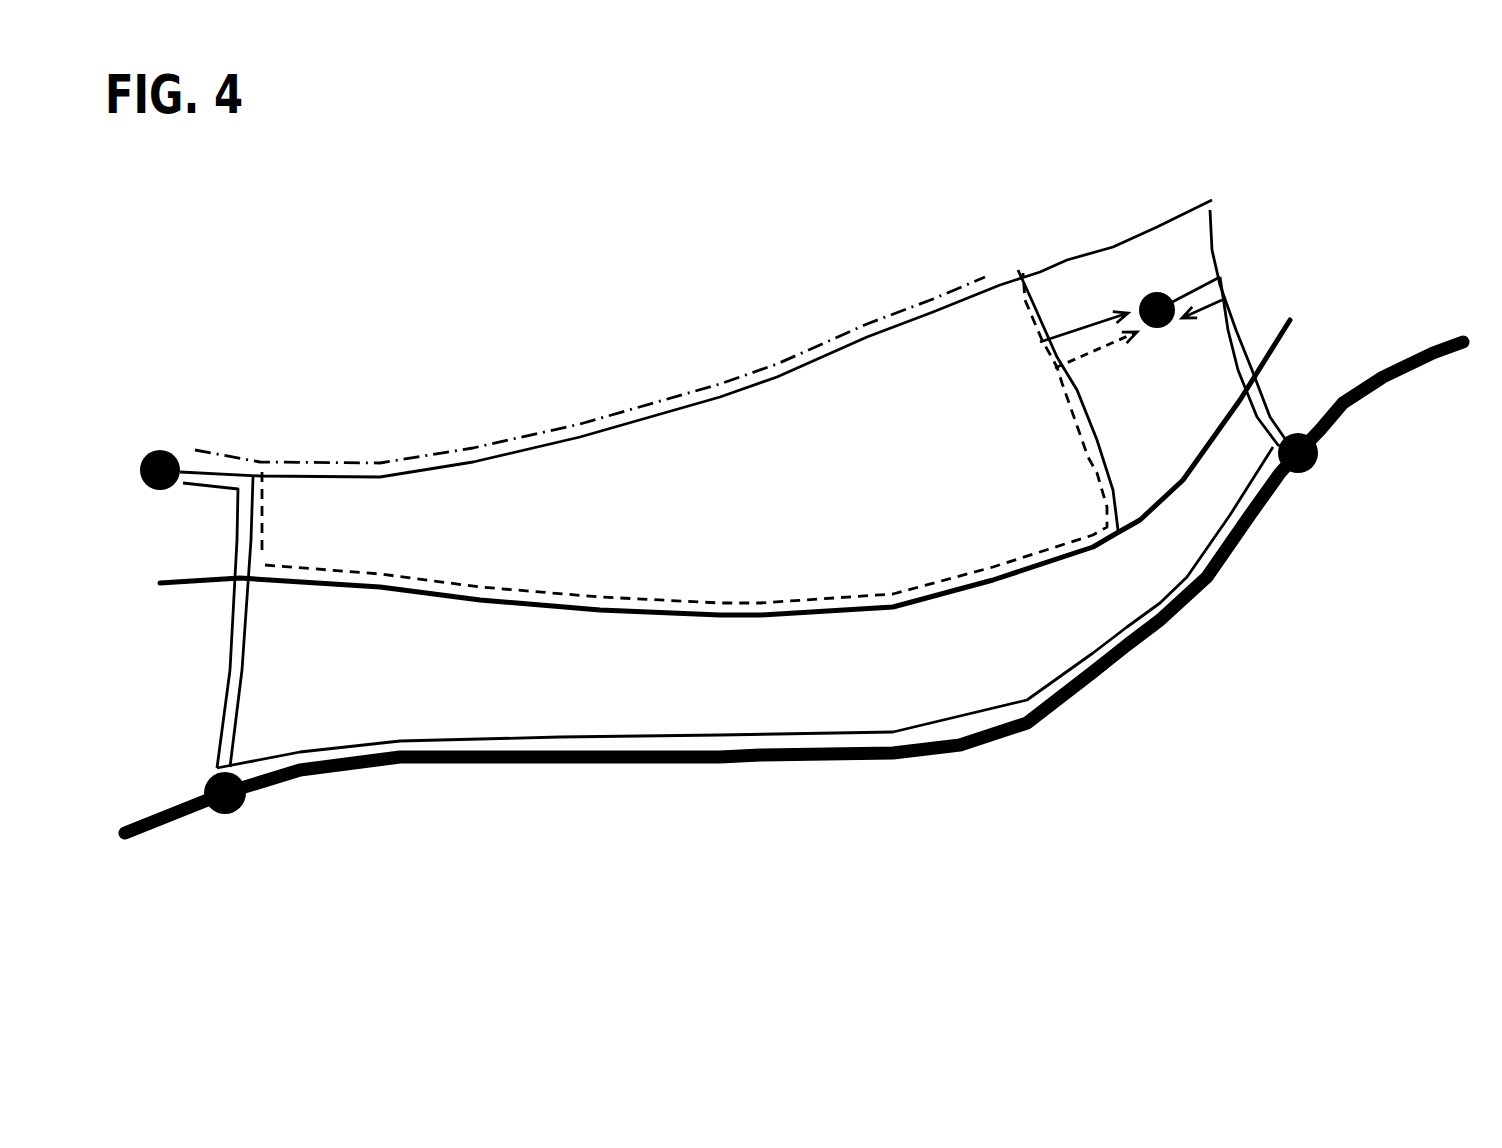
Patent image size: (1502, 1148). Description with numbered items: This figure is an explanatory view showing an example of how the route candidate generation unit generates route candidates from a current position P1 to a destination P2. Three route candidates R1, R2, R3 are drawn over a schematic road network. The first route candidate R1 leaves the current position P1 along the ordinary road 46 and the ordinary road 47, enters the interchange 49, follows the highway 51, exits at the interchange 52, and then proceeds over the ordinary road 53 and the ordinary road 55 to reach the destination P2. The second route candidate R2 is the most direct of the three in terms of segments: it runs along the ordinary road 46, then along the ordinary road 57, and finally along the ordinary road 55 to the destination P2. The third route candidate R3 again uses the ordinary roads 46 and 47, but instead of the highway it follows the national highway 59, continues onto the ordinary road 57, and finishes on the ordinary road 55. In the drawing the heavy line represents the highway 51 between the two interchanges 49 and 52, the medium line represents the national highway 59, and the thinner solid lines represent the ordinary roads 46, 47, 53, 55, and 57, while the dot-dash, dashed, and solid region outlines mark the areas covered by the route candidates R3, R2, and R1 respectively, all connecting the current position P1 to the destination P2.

The ordinary road 46 is at (473, 465).
The ordinary road 47 is at (251, 625).
The interchange 49 is at (235, 815).
The highway 51 is at (818, 765).
The interchange 52 is at (1315, 465).
The ordinary road 53 is at (1233, 300).
The ordinary road 55 is at (1197, 285).
The ordinary road 57 is at (1050, 348).
The national highway 59 is at (893, 610).
The route candidate R1 is at (770, 735).
The route candidate R2 is at (822, 595).
The route candidate R3 is at (827, 335).
The current position P1 is at (138, 470).
The destination P2 is at (1157, 337).